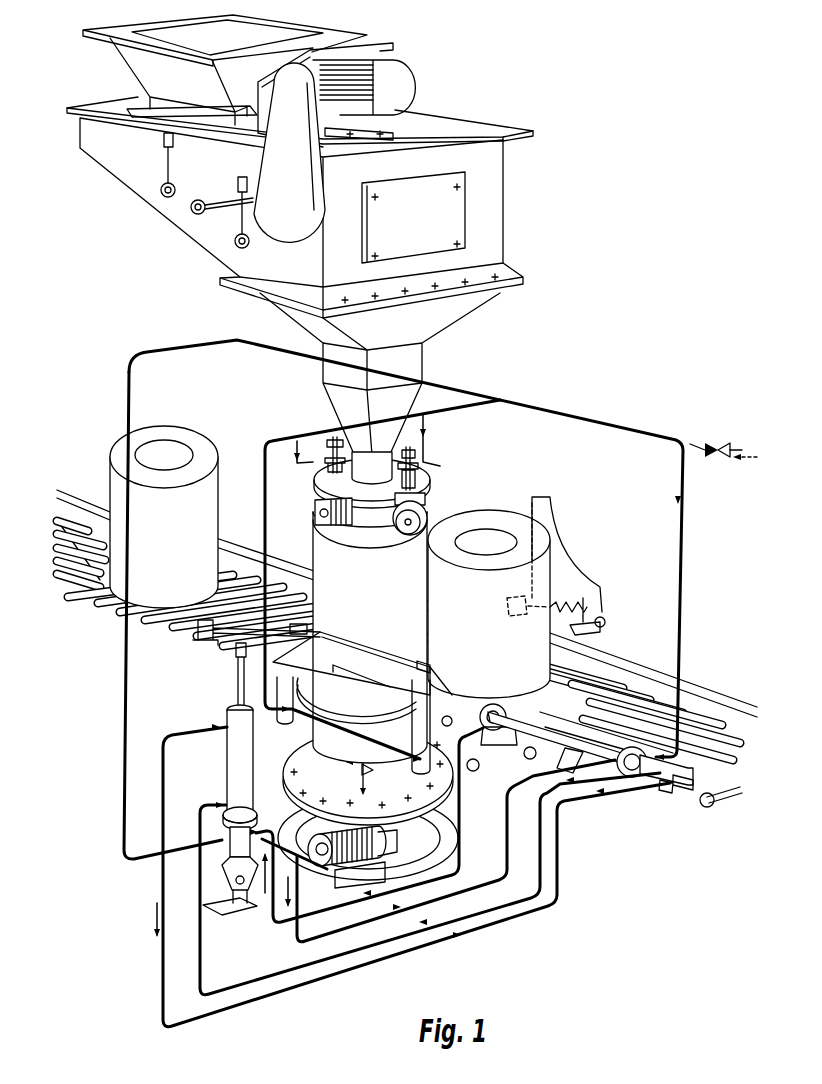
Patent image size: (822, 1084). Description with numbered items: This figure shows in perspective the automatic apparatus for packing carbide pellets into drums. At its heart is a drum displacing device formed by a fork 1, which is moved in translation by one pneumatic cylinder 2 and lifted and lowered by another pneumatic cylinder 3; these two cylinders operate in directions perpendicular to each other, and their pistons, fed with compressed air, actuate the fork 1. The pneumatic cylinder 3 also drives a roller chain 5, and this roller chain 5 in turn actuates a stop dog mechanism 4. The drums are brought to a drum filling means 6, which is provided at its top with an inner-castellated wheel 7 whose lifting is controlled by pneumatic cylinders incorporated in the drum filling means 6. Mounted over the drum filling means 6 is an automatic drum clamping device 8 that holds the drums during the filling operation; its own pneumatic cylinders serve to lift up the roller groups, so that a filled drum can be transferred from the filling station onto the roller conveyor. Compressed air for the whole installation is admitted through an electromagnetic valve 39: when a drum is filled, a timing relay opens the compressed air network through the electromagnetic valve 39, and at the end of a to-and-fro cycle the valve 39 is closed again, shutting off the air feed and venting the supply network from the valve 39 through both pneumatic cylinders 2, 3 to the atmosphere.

The fork 1 is at (396, 648).
The pneumatic cylinder 2 is at (606, 750).
The pneumatic cylinder 3 is at (233, 765).
The stop dog mechanism 4 is at (563, 570).
The roller chain 5 is at (495, 770).
The drum filling means 6 is at (395, 745).
The inner-castellated wheel 7 is at (342, 687).
The drum clamping device 8 is at (422, 480).
The electromagnetic valve 39 is at (713, 443).